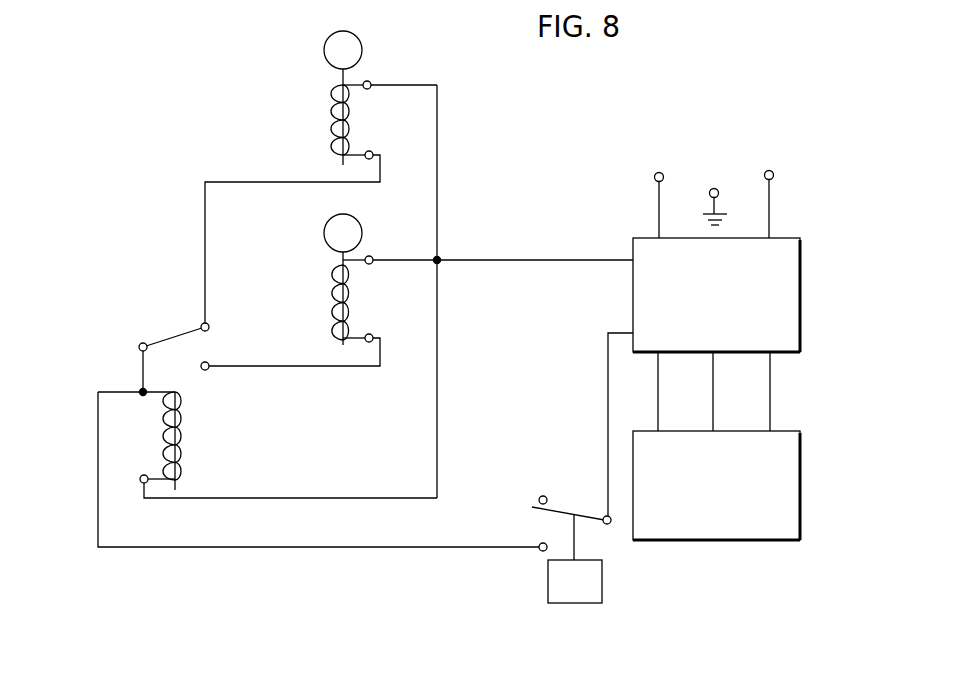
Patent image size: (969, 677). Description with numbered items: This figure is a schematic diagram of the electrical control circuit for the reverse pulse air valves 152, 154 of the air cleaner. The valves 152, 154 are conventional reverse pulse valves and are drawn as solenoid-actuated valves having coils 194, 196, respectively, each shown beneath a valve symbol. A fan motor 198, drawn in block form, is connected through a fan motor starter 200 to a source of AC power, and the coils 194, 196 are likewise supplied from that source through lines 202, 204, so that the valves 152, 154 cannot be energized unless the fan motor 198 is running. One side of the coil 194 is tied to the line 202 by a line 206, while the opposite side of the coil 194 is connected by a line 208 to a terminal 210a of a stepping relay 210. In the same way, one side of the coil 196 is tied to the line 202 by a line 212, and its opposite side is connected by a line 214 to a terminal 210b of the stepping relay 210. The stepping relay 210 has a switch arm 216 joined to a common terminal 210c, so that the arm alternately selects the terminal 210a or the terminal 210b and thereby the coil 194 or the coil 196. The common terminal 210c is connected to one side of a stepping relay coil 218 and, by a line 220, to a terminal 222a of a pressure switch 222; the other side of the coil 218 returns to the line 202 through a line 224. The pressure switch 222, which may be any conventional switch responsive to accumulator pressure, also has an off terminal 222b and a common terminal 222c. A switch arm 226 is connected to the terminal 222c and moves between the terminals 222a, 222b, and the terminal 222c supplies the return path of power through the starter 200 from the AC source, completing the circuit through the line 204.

The reverse pulse air valve 152 is at (321, 98).
The coil 194 is at (355, 122).
The reverse pulse air valve 154 is at (330, 279).
The coil 196 is at (355, 299).
The fan motor 198 is at (800, 445).
The fan motor starter 200 is at (803, 270).
The line 202 is at (600, 250).
The line 204 is at (606, 370).
The line 206 is at (441, 213).
The line 208 is at (312, 183).
The stepping relay 210 is at (179, 331).
The terminal 210a is at (203, 323).
The terminal 210b is at (207, 370).
The common terminal 210c is at (141, 346).
The line 212 is at (401, 243).
The line 214 is at (343, 368).
The switch arm 216 is at (190, 337).
The stepping relay coil 218 is at (186, 441).
The line 220 is at (300, 546).
The pressure switch 222 is at (567, 529).
The terminal 222a is at (539, 551).
The off terminal 222b is at (540, 497).
The common terminal 222c is at (610, 526).
The line 224 is at (288, 484).
The switch arm 226 is at (553, 510).